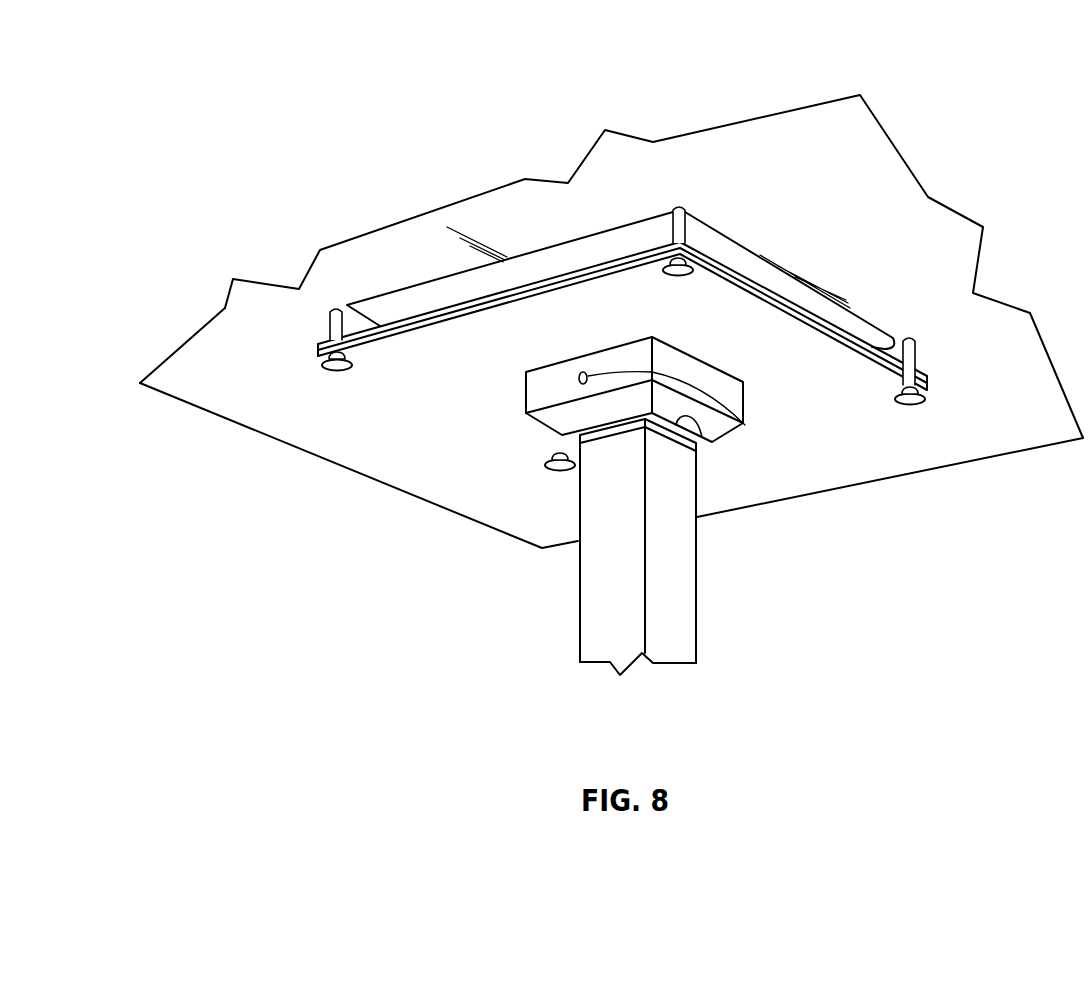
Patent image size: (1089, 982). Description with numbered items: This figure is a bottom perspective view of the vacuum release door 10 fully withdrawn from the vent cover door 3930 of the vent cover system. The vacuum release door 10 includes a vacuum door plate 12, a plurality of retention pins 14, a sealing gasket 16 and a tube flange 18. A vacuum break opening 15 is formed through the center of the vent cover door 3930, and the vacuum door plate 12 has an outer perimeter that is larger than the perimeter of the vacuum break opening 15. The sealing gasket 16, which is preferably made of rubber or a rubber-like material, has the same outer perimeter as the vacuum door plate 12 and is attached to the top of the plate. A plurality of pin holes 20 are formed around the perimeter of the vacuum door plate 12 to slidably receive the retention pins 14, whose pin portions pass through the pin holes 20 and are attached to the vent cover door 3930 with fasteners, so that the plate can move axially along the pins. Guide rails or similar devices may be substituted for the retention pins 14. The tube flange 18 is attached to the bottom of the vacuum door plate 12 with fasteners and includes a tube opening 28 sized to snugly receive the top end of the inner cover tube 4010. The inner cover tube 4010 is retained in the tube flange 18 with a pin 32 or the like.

The vacuum release door 10 is at (538, 404).
The vacuum door plate 12 is at (800, 398).
The retention pins 14 is at (567, 475).
The vacuum break opening 15 is at (360, 300).
The sealing gasket 16 is at (322, 333).
The tube flange 18 is at (553, 423).
The pin holes 20 is at (545, 455).
The tube opening 28 is at (682, 430).
The pin 32 is at (745, 425).
The vent cover door 3930 is at (310, 418).
The inner cover tube 4010 is at (603, 628).